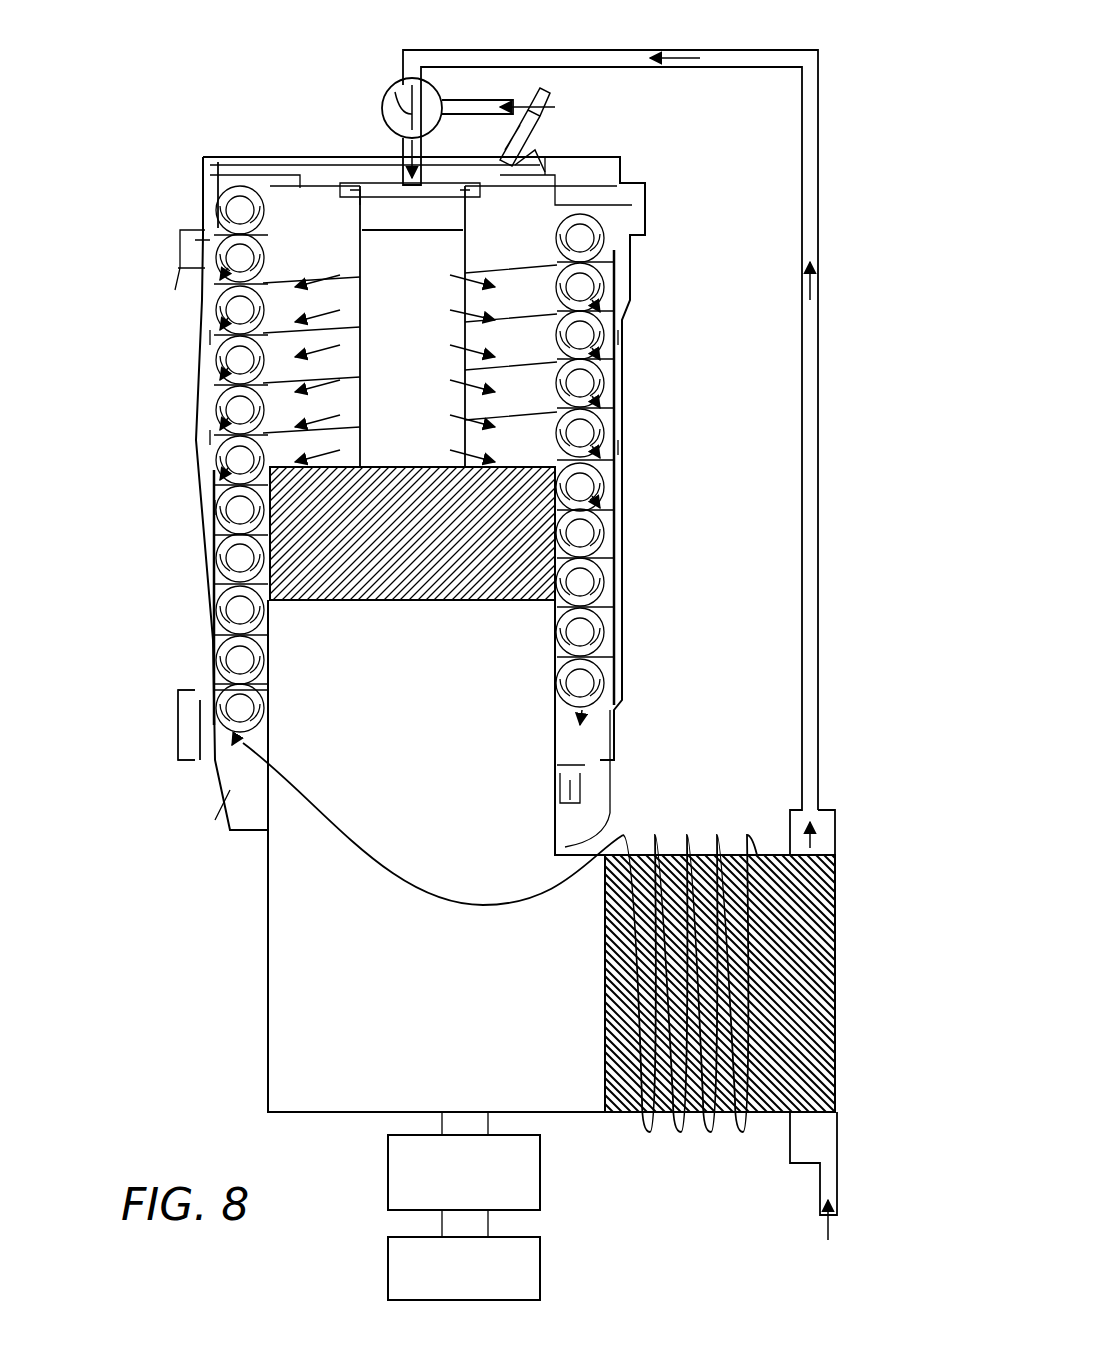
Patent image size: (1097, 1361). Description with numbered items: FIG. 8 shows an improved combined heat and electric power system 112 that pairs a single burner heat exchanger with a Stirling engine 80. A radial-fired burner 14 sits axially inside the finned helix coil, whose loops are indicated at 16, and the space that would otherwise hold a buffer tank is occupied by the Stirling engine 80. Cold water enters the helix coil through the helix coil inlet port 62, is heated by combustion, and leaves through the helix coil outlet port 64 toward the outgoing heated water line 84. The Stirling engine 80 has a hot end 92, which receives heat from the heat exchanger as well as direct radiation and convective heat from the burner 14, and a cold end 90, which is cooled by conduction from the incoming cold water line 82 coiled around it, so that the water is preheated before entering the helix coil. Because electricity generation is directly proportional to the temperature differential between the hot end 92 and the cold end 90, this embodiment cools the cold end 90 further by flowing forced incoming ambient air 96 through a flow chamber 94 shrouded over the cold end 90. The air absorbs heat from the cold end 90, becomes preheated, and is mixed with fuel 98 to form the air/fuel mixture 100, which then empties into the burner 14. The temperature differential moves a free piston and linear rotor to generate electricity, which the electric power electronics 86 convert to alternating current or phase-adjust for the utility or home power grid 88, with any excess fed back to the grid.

The burner 14 is at (400, 280).
The heat exchanger rings 16 is at (215, 385).
The helix coil inlet port 62 is at (205, 700).
The helix coil outlet port 64 is at (208, 186).
The Stirling engine 80 is at (290, 942).
The incoming cold water line 82 is at (770, 1112).
The outgoing heated water line 84 is at (243, 207).
The electric power electronics 86 is at (464, 1161).
The utility or home power grid 88 is at (464, 1255).
The cold end of Stirling engine 90 is at (790, 940).
The hot end of Stirling engine 92 is at (470, 540).
The flow chamber 94 is at (790, 820).
The forced incoming ambient air 96 is at (832, 1230).
The fuel 98 is at (542, 100).
The air/fuel mixture 100 is at (392, 92).
The improved combined heat and electric power system 112 is at (820, 20).